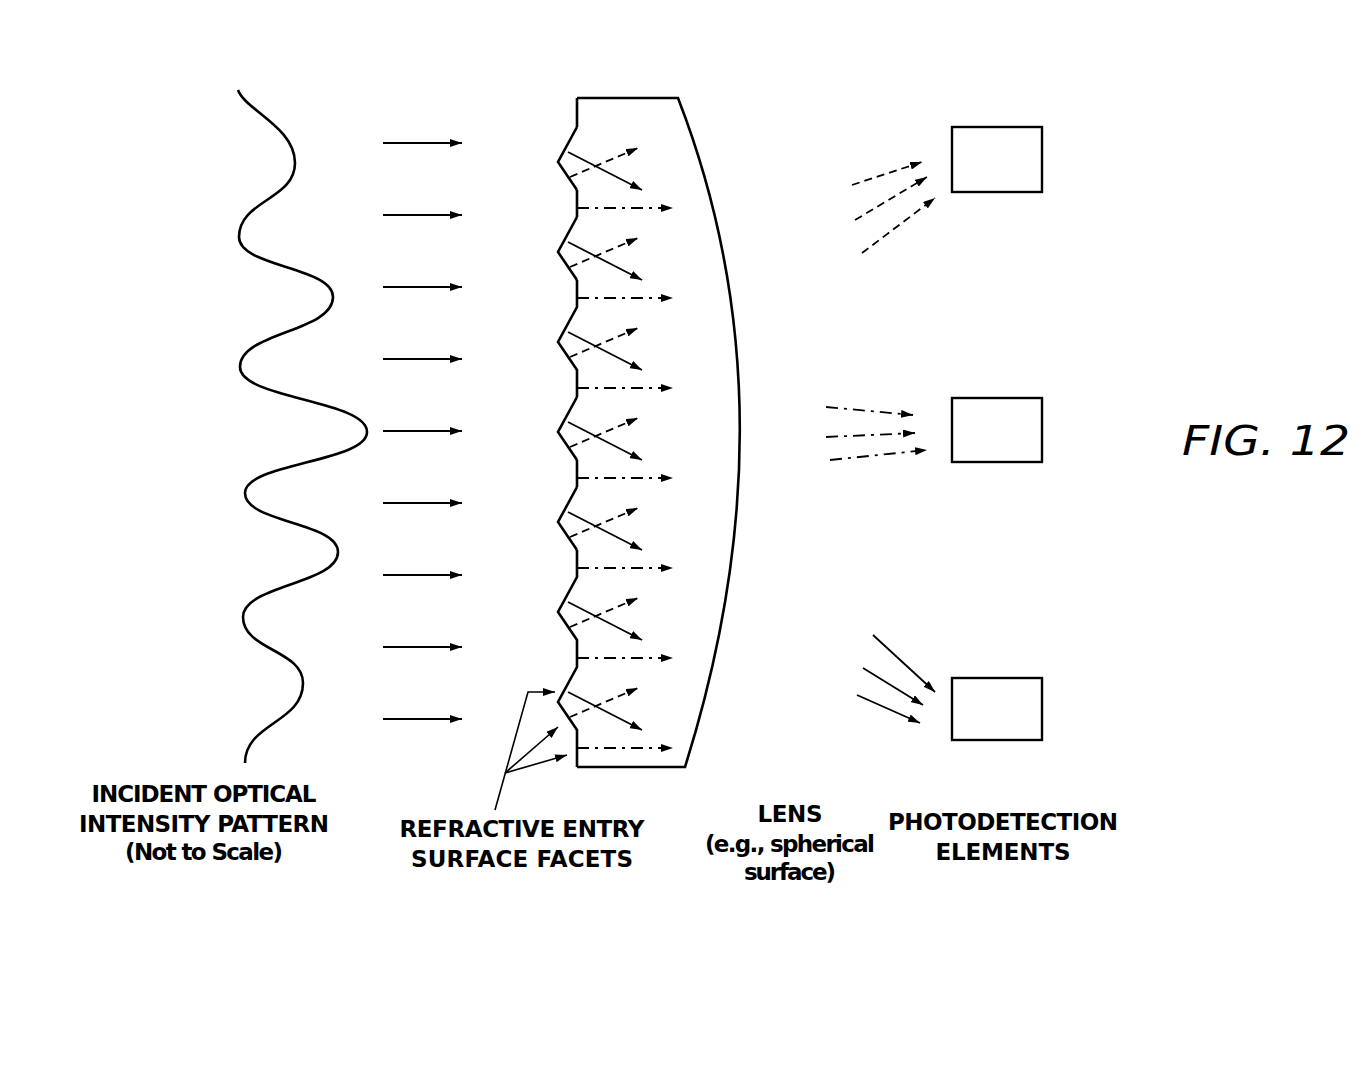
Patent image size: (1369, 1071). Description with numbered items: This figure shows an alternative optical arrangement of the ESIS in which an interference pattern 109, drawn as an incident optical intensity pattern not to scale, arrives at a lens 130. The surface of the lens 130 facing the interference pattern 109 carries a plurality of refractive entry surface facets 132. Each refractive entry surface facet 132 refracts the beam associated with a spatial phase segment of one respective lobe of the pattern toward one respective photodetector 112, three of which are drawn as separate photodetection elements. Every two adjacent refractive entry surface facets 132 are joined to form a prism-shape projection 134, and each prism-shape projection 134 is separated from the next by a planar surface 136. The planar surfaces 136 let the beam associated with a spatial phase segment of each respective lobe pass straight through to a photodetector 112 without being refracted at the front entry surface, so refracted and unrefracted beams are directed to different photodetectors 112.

The interference pattern 109 is at (270, 128).
The lens 130 is at (697, 145).
The refractive entry surface facets 132 is at (567, 148).
The prism-shape projection 134 is at (558, 430).
The planar surface 136 is at (577, 478).
The photodetector 112 is at (1042, 160).